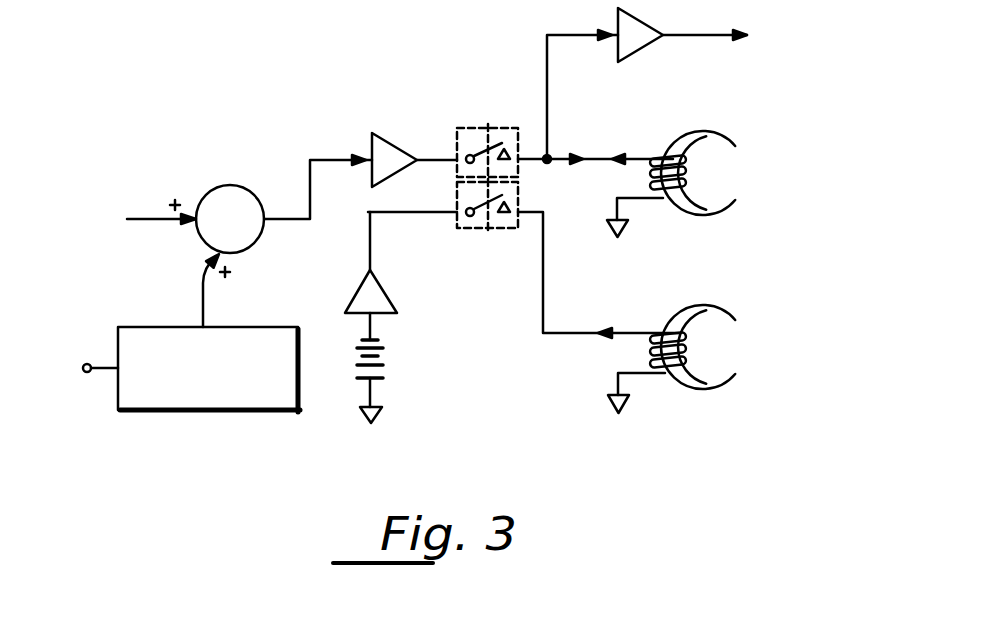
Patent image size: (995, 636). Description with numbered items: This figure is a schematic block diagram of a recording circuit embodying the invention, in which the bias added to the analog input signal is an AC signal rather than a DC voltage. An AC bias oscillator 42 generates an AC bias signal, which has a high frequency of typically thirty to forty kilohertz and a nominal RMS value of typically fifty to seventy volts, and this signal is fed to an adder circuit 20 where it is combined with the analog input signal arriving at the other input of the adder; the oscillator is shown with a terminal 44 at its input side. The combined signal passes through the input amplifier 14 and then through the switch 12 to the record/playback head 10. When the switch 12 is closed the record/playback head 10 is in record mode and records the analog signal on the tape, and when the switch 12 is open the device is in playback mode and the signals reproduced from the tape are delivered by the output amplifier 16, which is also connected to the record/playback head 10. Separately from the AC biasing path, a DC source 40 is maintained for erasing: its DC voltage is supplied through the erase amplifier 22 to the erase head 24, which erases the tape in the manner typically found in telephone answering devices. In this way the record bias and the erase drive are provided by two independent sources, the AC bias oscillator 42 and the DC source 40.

The record/playback head 10 is at (735, 148).
The switch 12 is at (488, 125).
The input amplifier 14 is at (390, 141).
The output amplifier 16 is at (638, 16).
The adder circuit 20 is at (228, 184).
The erase amplifier 22 is at (383, 288).
The erase head 24 is at (733, 323).
The DC source 40 is at (385, 363).
The AC bias oscillator 42 is at (168, 412).
The input terminal 44 is at (85, 363).